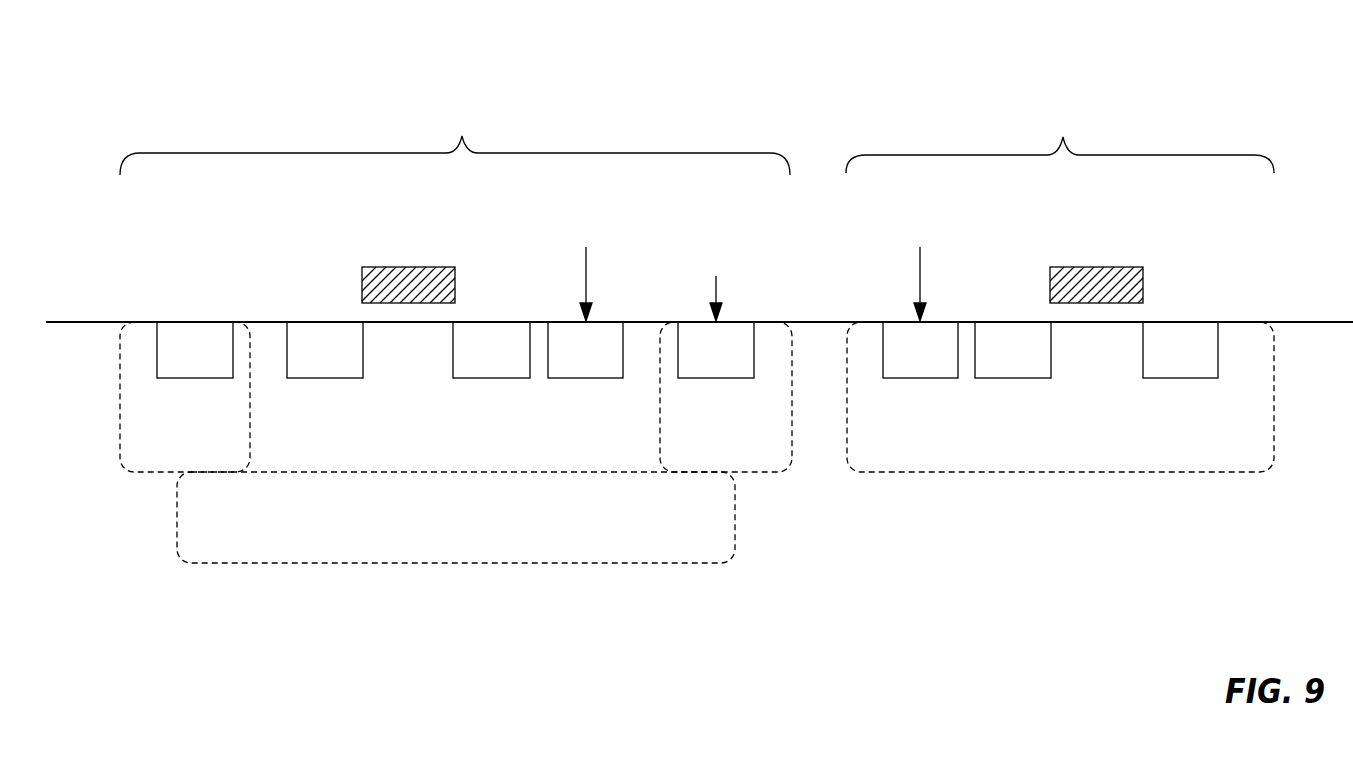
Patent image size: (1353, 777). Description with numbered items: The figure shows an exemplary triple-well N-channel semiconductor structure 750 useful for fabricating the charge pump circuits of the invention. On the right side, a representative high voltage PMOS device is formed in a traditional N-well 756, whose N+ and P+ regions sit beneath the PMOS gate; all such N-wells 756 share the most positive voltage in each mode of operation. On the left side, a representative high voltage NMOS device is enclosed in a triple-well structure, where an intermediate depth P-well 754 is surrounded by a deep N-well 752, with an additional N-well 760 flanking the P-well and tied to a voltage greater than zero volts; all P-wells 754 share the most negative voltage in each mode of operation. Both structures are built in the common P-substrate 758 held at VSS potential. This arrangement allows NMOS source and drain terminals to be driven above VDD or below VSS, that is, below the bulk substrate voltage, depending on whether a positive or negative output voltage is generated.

The high voltage CMOS device structure 750 is at (1240, 71).
The deep N-well 752 is at (228, 545).
The P-well 754 is at (562, 461).
The N-well 756 is at (906, 461).
The P-substrate (VSS potential) 758 is at (1045, 553).
The N-well of high voltage NMOS 760 is at (708, 425).